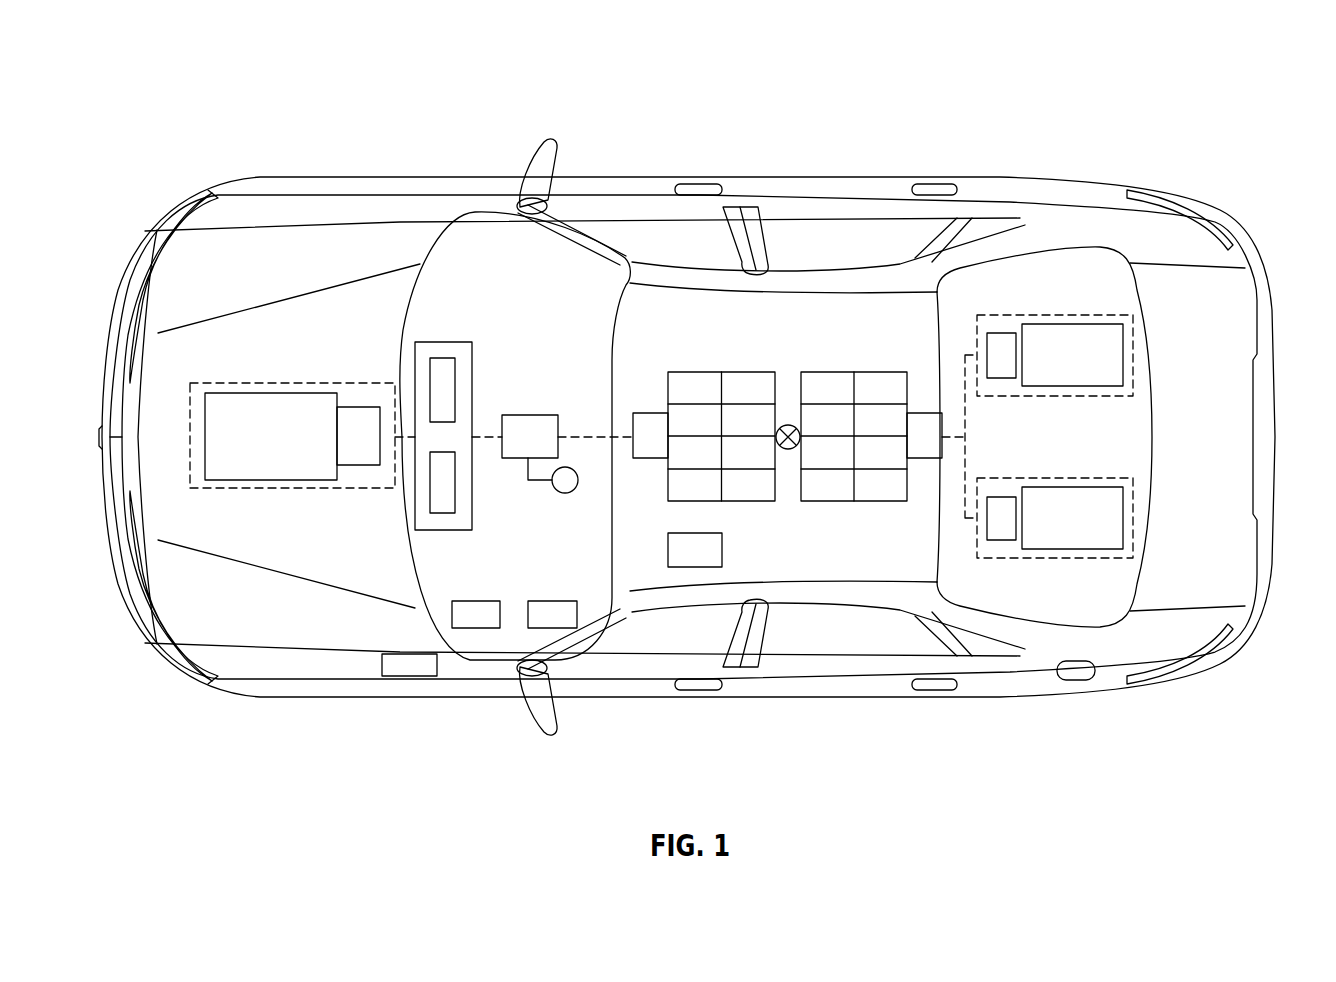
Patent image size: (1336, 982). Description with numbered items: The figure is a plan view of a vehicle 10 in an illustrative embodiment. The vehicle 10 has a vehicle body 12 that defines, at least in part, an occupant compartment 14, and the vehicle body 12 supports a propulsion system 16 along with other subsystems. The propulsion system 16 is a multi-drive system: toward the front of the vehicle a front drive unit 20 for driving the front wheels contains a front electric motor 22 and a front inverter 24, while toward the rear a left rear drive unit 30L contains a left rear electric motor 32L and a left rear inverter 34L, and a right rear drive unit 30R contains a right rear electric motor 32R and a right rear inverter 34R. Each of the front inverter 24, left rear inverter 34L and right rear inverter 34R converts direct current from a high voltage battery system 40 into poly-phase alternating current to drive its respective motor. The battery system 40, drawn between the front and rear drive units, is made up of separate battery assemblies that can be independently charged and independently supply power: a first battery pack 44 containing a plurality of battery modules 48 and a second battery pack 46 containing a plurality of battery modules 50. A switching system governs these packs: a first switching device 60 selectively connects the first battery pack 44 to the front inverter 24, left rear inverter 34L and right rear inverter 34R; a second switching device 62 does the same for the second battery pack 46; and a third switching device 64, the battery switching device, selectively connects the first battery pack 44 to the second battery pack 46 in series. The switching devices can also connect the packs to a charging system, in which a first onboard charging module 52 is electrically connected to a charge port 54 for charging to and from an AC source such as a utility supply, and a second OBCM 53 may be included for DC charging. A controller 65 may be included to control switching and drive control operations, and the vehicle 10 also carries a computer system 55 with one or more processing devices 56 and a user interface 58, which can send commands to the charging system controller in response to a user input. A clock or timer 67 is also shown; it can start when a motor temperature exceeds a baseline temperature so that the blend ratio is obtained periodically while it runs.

The vehicle 10 is at (205, 118).
The vehicle body 12 is at (748, 174).
The occupant compartment 14 is at (820, 597).
The propulsion system 16 is at (220, 540).
The front drive unit 20 is at (300, 429).
The front electric motor 22 is at (305, 393).
The front inverter 24 is at (368, 467).
The right rear drive unit 30R is at (1138, 230).
The left rear drive unit 30L is at (1052, 647).
The right rear electric motor 32R is at (1083, 324).
The left rear electric motor 32L is at (1080, 549).
The right rear inverter 34R is at (1000, 333).
The left rear inverter 34L is at (1000, 540).
The battery system 40 is at (742, 417).
The first battery pack 44 is at (726, 444).
The second battery pack 46 is at (854, 444).
The battery modules 48 is at (748, 380).
The battery modules 50 is at (822, 380).
The first onboard charging module 52 is at (557, 628).
The second OBCM 53 is at (477, 628).
The charge port 54 is at (405, 683).
The computer system 55 is at (509, 380).
The processing devices 56 is at (456, 395).
The user interface 58 is at (456, 500).
The first switching device 60 is at (648, 413).
The second switching device 62 is at (930, 413).
The third switching device 64 is at (788, 450).
The controller 65 is at (530, 413).
The clock or timer 67 is at (565, 494).